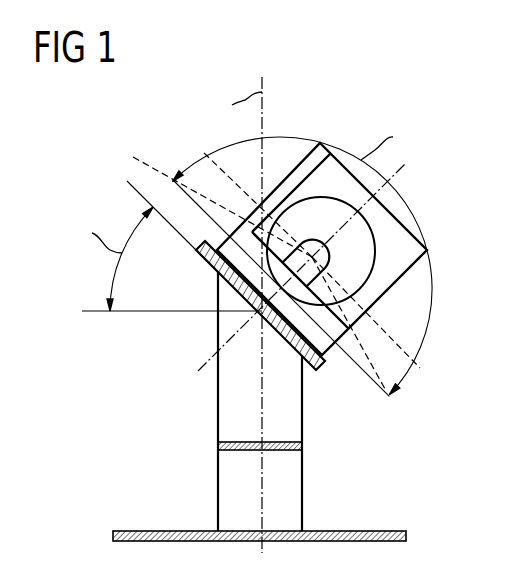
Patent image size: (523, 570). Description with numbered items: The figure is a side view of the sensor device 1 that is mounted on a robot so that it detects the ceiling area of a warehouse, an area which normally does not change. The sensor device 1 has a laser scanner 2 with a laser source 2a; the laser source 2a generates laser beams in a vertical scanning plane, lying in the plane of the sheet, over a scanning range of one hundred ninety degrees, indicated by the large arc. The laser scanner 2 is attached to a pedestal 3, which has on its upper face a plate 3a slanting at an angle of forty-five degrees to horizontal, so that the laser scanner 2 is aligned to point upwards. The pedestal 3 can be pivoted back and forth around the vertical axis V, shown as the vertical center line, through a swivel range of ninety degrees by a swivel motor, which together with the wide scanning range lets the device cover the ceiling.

The sensor device 1 is at (353, 107).
The laser scanner 2 is at (382, 206).
The laser source 2a is at (331, 247).
The pedestal 3 is at (298, 468).
The plate 3a is at (316, 370).